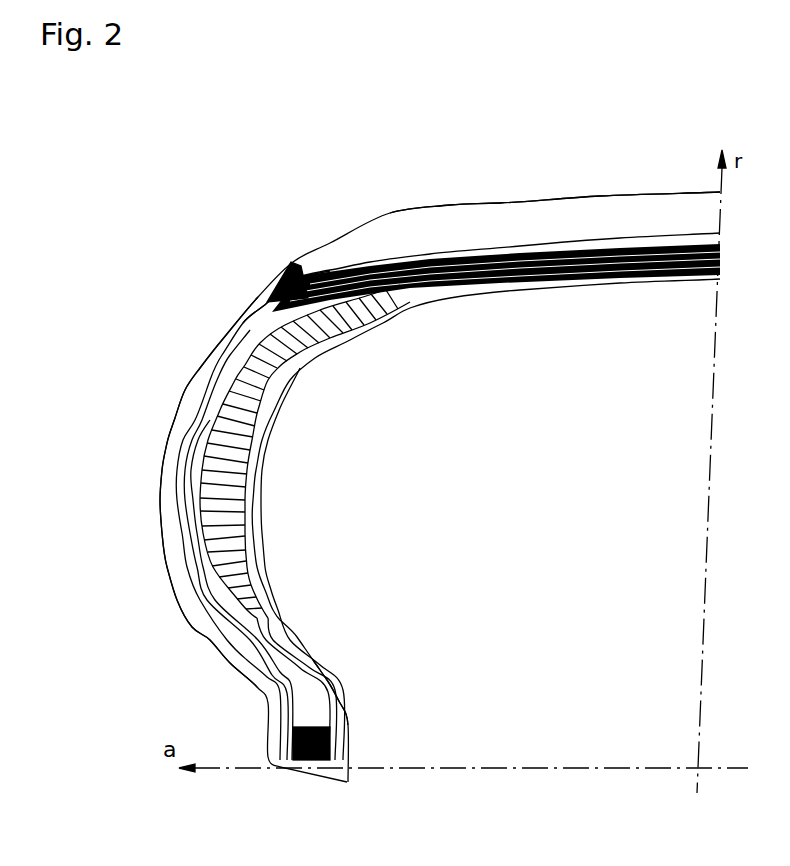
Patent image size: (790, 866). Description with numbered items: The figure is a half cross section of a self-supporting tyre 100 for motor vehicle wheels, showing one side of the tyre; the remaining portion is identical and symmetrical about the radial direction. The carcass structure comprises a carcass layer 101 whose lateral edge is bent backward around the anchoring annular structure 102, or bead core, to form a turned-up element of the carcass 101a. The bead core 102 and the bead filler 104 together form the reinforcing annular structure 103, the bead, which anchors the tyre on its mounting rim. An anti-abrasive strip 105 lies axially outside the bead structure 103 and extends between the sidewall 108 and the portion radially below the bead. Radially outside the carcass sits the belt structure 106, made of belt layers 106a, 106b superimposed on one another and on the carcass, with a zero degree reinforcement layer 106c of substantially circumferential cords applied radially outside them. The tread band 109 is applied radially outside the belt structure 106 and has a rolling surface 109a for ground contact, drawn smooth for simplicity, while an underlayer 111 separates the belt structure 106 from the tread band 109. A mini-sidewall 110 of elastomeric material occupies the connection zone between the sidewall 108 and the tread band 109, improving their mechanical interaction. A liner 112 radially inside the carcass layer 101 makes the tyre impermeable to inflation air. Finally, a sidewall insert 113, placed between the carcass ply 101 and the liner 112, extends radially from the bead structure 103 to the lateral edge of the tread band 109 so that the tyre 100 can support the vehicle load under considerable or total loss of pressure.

The tyre 100 is at (192, 342).
The carcass layer 101 is at (322, 355).
The turned-up elements of the carcass 101a is at (290, 613).
The anchoring annular structure 102 is at (293, 773).
The reinforcing annular structure 103 is at (340, 700).
The bead filler 104 is at (305, 694).
The anti-abrasive strip 105 is at (238, 642).
The belt structure 106 is at (575, 252).
The belt layer 106a is at (572, 257).
The belt layer 106b is at (650, 273).
The zero degree reinforcement layer 106c is at (470, 277).
The sidewall 108 is at (171, 447).
The tread band 109 is at (475, 230).
The rolling surface 109a is at (392, 214).
The mini-sidewall 110 is at (265, 308).
The underlayer 111 is at (322, 268).
The liner 112 is at (262, 452).
The sidewall insert 113 is at (220, 513).